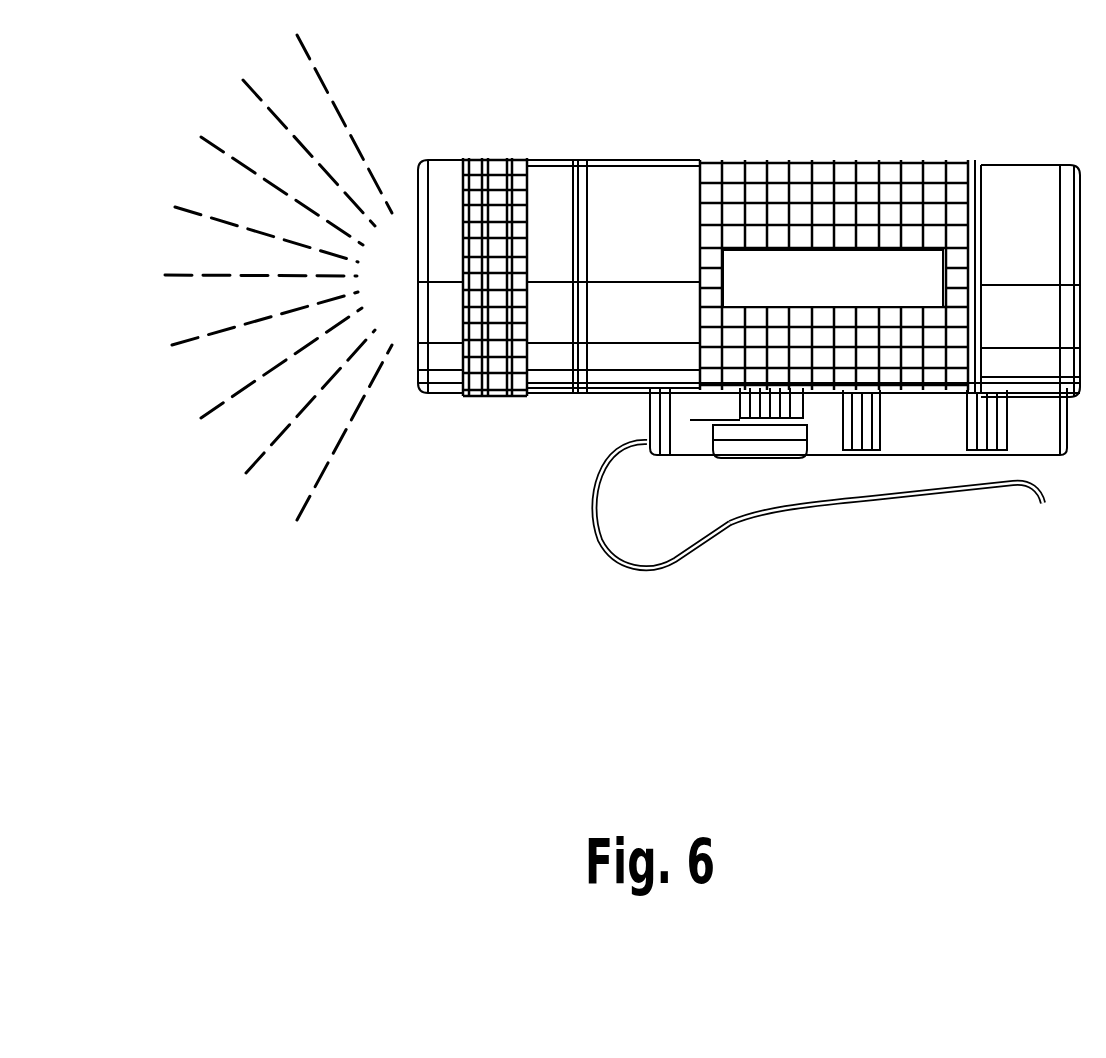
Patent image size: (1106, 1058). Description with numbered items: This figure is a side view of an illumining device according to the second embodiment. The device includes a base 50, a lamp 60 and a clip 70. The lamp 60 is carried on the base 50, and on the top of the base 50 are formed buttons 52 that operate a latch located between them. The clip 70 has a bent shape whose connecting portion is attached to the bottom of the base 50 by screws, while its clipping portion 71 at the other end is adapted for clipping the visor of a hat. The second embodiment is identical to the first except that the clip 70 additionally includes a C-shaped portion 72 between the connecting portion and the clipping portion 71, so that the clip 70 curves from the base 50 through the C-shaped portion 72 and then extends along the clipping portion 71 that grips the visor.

The base 50 is at (965, 422).
The button 52 is at (757, 422).
The lamp 60 is at (740, 162).
The clip 70 is at (818, 553).
The clipping portion 71 is at (880, 475).
The C-shaped portion 72 is at (650, 533).